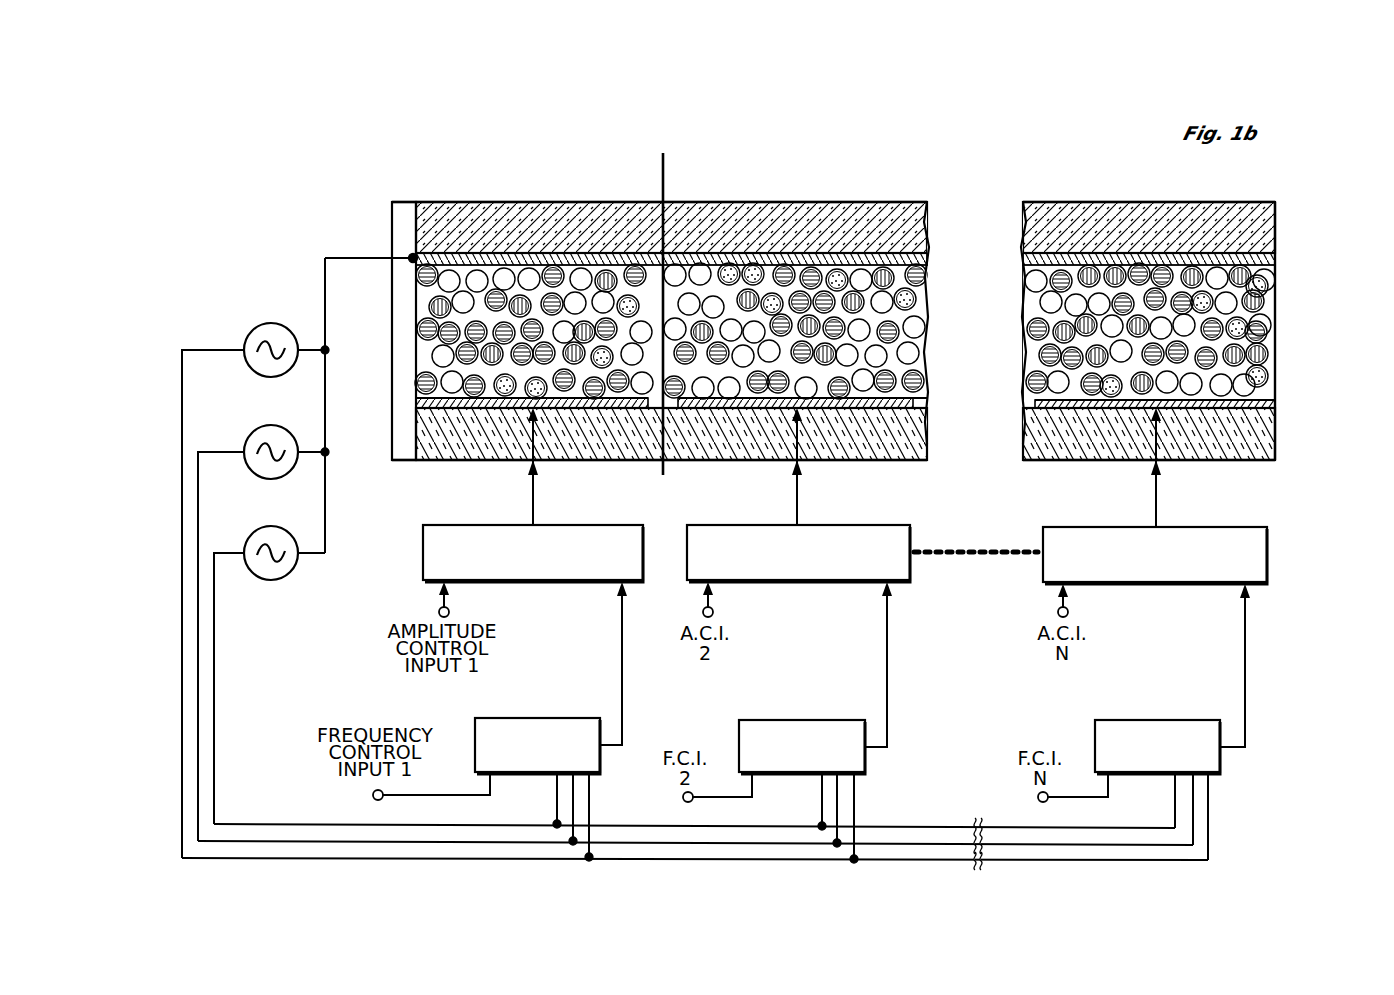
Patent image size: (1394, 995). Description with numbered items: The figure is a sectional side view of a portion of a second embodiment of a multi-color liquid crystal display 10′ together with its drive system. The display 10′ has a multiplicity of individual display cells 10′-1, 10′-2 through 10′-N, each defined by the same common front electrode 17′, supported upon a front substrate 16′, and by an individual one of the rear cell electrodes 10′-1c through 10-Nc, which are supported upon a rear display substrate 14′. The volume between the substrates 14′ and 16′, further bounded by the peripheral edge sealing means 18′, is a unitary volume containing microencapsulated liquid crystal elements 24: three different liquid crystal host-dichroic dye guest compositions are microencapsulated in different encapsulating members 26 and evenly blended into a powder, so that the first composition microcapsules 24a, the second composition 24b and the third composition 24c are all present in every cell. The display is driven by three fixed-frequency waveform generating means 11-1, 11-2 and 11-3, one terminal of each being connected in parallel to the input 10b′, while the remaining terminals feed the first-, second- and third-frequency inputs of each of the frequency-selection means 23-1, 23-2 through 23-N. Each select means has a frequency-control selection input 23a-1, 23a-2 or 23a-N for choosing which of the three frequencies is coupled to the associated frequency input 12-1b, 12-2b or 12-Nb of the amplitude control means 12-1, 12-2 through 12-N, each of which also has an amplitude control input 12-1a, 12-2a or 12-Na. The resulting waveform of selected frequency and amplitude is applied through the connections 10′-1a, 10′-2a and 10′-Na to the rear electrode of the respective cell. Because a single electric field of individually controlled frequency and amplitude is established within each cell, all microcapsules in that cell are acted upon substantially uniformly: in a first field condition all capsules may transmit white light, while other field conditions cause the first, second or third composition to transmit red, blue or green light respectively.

The multi-color liquid crystal display 10′ is at (250, 124).
The first display cell 10′-1 is at (500, 192).
The second display cell 10′-2 is at (790, 192).
The Nth display cell 10′-N is at (1122, 192).
The peripheral edge sealing means 18′ is at (392, 210).
The input 10b′ is at (325, 278).
The first fixed-frequency waveform generating means 11-1 is at (250, 330).
The second fixed-frequency waveform generating means 11-2 is at (250, 430).
The third fixed-frequency waveform generating means 11-3 is at (259, 530).
The rear cell electrode 10′-1c is at (392, 390).
The front substrate 16′ is at (1275, 216).
The common front electrode 17′ is at (1275, 258).
The microencapsulated liquid crystal elements 24 is at (1282, 272).
The first liquid crystal composition microcapsules 24a is at (1275, 285).
The second liquid crystal composition 24b is at (1275, 330).
The third liquid crystal composition 24c is at (1275, 372).
The encapsulating members 26 is at (1275, 305).
The rear cell electrode 10-Nc is at (1275, 425).
The rear display substrate 14′ is at (1260, 445).
The first cell drive input 10′-1a is at (533, 492).
The second cell drive input 10′-2a is at (797, 492).
The Nth cell drive input 10′-Na is at (1156, 492).
The first amplitude control means 12-1 is at (490, 525).
The second amplitude control means 12-2 is at (758, 525).
The Nth amplitude control means 12-N is at (1116, 527).
The amplitude control input 12-1a is at (450, 604).
The amplitude control input 12-2a is at (712, 604).
The amplitude control input 12-Na is at (1068, 604).
The amplitude control means frequency input 12-1b is at (618, 626).
The amplitude control means frequency input 12-2b is at (884, 626).
The amplitude control means frequency input 12-Nb is at (1242, 626).
The first frequency-selection means 23-1 is at (544, 770).
The second frequency-selection means 23-2 is at (802, 771).
The Nth frequency-selection means 23-N is at (1157, 769).
The frequency-control selection input 23a-1 is at (505, 805).
The frequency-control selection input 23a-2 is at (752, 782).
The frequency-control selection input 23a-N is at (1108, 782).